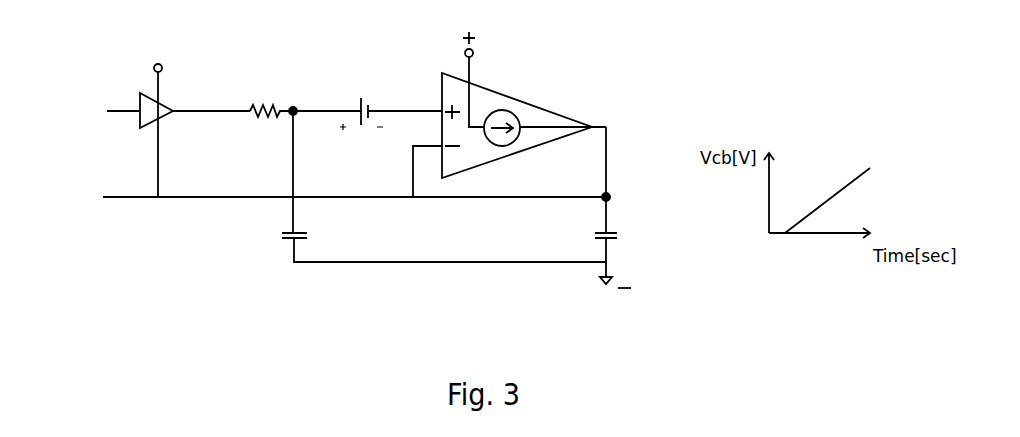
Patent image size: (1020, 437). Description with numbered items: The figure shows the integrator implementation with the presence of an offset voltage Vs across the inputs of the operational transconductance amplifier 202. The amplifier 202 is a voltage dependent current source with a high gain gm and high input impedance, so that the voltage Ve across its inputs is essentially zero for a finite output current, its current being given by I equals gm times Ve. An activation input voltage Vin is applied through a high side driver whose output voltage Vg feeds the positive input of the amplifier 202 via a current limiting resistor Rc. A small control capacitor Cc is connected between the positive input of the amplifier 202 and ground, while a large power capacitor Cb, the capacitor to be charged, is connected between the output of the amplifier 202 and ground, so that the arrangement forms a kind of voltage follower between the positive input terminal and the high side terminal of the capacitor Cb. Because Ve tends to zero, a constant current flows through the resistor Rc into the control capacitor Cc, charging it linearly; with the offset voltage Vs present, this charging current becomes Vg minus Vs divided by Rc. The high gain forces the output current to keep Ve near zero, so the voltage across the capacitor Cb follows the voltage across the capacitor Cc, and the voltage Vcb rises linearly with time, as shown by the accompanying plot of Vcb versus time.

The operational transconductance amplifier 202 is at (580, 110).
The activation input voltage Vin is at (130, 85).
The output voltage of the high side driver Vg is at (178, 98).
The current limiting resistor Rc is at (263, 102).
The offset voltage Vs is at (363, 87).
The input voltage across amplifier inputs Ve is at (405, 119).
The voltage across capacitor Cb Vcb is at (600, 190).
The control capacitor Cc is at (280, 232).
The power capacitor Cb is at (593, 232).